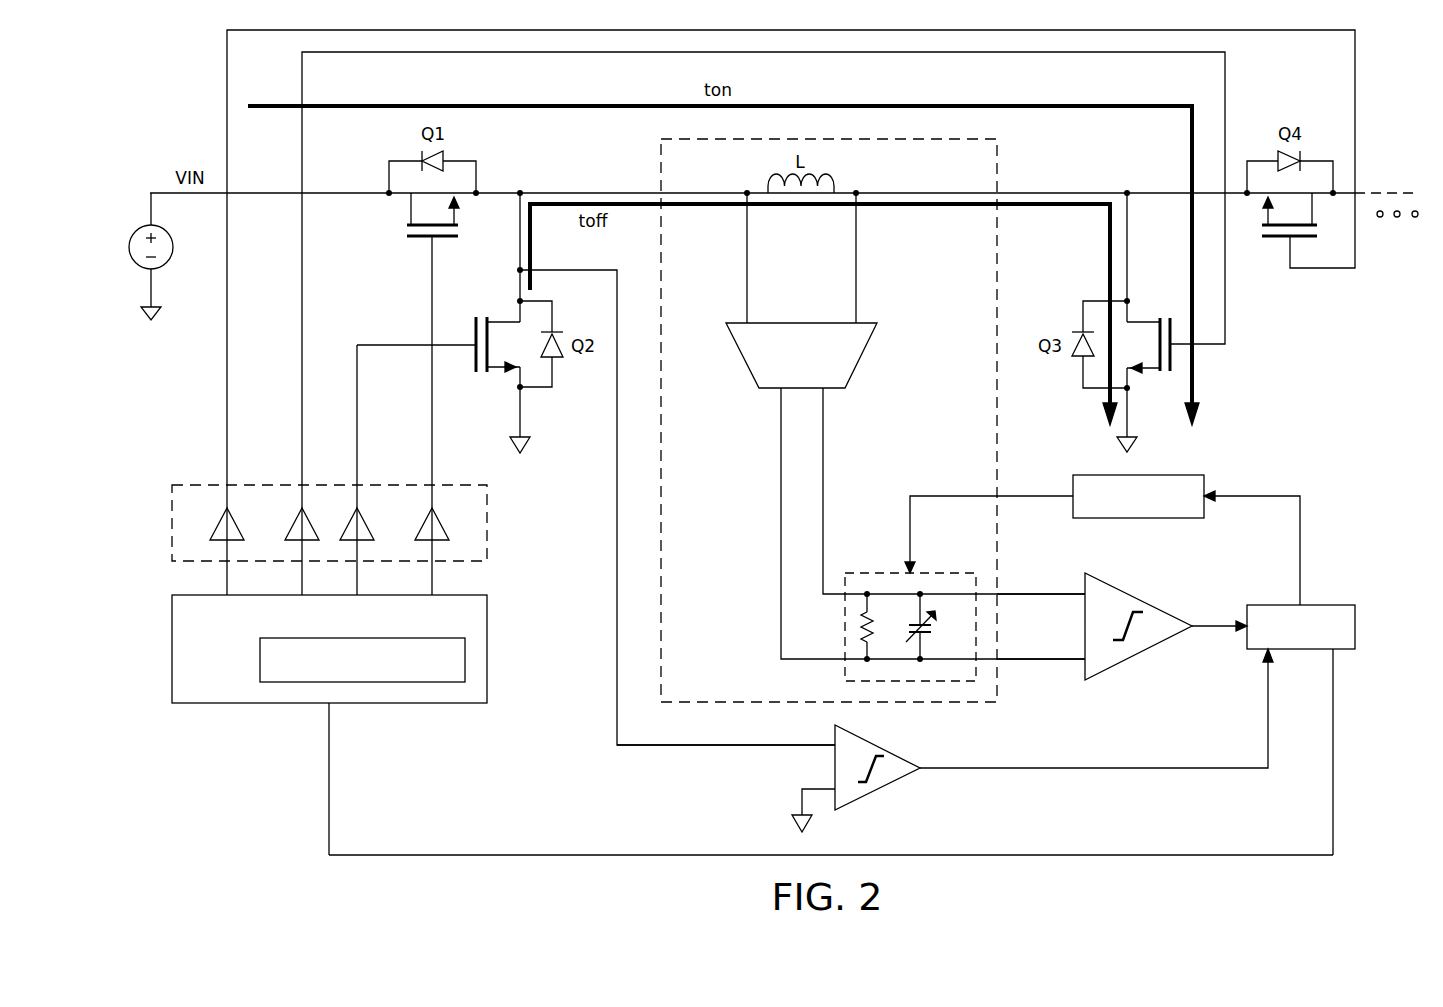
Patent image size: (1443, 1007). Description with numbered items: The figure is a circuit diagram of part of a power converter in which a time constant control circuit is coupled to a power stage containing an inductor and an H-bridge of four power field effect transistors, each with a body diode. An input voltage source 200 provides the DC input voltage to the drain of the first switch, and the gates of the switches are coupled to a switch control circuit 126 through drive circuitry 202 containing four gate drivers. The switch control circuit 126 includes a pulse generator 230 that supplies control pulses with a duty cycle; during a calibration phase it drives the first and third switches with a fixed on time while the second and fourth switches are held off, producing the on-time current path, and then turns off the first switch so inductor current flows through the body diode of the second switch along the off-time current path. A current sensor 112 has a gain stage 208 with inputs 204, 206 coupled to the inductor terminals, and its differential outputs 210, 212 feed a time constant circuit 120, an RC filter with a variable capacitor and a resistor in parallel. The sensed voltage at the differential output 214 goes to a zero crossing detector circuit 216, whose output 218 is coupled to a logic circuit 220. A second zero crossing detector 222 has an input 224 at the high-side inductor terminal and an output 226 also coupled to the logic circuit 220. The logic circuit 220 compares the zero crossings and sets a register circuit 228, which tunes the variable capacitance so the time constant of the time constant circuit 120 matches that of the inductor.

The input voltage source 200 is at (128, 247).
The drive circuitry 202 is at (165, 525).
The input of the gain stage 204 is at (747, 257).
The input of the gain stage 206 is at (856, 257).
The gain stage 208 is at (865, 355).
The output of the gain stage 210 is at (823, 475).
The output of the gain stage 212 is at (780, 525).
The differential output 214 is at (1040, 593).
The zero crossing detector circuit 216 is at (1140, 655).
The output of the zero crossing detector circuit 218 is at (1214, 630).
The logic circuit 220 is at (1357, 633).
The zero crossing detector 222 is at (880, 794).
The input of the zero crossing detector 224 is at (725, 748).
The output of the zero crossing detector 226 is at (1095, 770).
The register circuit 228 is at (1138, 519).
The pulse generator 230 is at (258, 660).
The switch control circuit 126 is at (171, 648).
The time constant circuit 120 is at (880, 569).
The current sensor 112 is at (1001, 275).